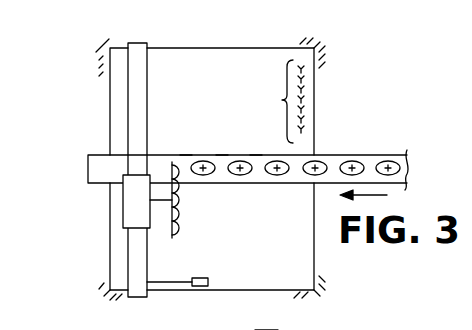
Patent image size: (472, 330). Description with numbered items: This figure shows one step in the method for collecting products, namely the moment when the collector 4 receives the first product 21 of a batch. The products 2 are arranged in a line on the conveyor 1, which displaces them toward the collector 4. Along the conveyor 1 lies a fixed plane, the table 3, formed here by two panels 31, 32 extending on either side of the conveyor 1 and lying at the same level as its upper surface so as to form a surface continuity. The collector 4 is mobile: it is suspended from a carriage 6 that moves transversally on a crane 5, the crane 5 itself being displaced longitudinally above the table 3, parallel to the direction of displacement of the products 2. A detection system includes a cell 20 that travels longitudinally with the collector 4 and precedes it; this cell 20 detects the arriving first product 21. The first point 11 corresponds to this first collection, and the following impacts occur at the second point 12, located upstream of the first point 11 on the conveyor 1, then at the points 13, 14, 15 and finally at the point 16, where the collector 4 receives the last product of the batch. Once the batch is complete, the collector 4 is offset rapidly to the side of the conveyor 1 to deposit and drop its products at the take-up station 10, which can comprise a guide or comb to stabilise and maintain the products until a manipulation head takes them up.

The conveyor 1 is at (90, 170).
The products 2 is at (352, 162).
The table 3 is at (174, 48).
The collector 4 is at (178, 240).
The crane 5 is at (130, 252).
The carriage 6 is at (128, 211).
The take-up station 10 is at (279, 101).
The first point 11 is at (186, 155).
The second point 12 is at (206, 176).
The point 13 is at (222, 155).
The point 14 is at (241, 176).
The point 15 is at (257, 157).
The point 16 is at (282, 174).
The cell 20 is at (200, 286).
The first product 21 is at (266, 327).
The panel 31 is at (236, 85).
The panel 32 is at (278, 265).